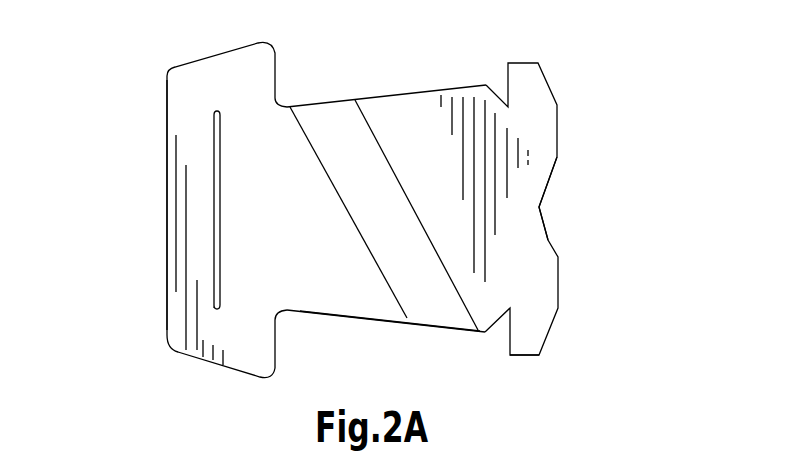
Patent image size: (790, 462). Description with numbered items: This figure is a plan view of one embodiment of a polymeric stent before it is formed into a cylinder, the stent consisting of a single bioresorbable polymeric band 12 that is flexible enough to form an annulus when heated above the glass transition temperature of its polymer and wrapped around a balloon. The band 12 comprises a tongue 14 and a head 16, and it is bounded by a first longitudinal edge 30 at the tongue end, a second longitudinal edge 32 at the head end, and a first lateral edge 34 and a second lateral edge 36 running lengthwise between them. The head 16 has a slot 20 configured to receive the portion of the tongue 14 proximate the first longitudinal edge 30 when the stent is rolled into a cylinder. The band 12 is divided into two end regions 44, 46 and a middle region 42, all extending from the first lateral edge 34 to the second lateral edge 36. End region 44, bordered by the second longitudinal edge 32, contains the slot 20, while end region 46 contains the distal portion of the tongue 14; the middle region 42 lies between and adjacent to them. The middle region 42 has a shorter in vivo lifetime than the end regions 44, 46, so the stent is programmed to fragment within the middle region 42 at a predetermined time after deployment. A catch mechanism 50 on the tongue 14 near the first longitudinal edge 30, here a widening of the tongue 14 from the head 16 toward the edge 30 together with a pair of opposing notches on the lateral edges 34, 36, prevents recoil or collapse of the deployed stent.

The polymeric band 12 is at (118, 194).
The tongue 14 is at (313, 278).
The head 16 is at (207, 88).
The slot 20 is at (215, 308).
The first longitudinal edge 30 is at (558, 137).
The second longitudinal edge 32 is at (167, 263).
The first lateral edge 34 is at (391, 98).
The second lateral edge 36 is at (325, 315).
The middle region 42 is at (418, 268).
The end region 44 is at (263, 163).
The end region 46 is at (403, 128).
The catch mechanism 50 is at (560, 362).